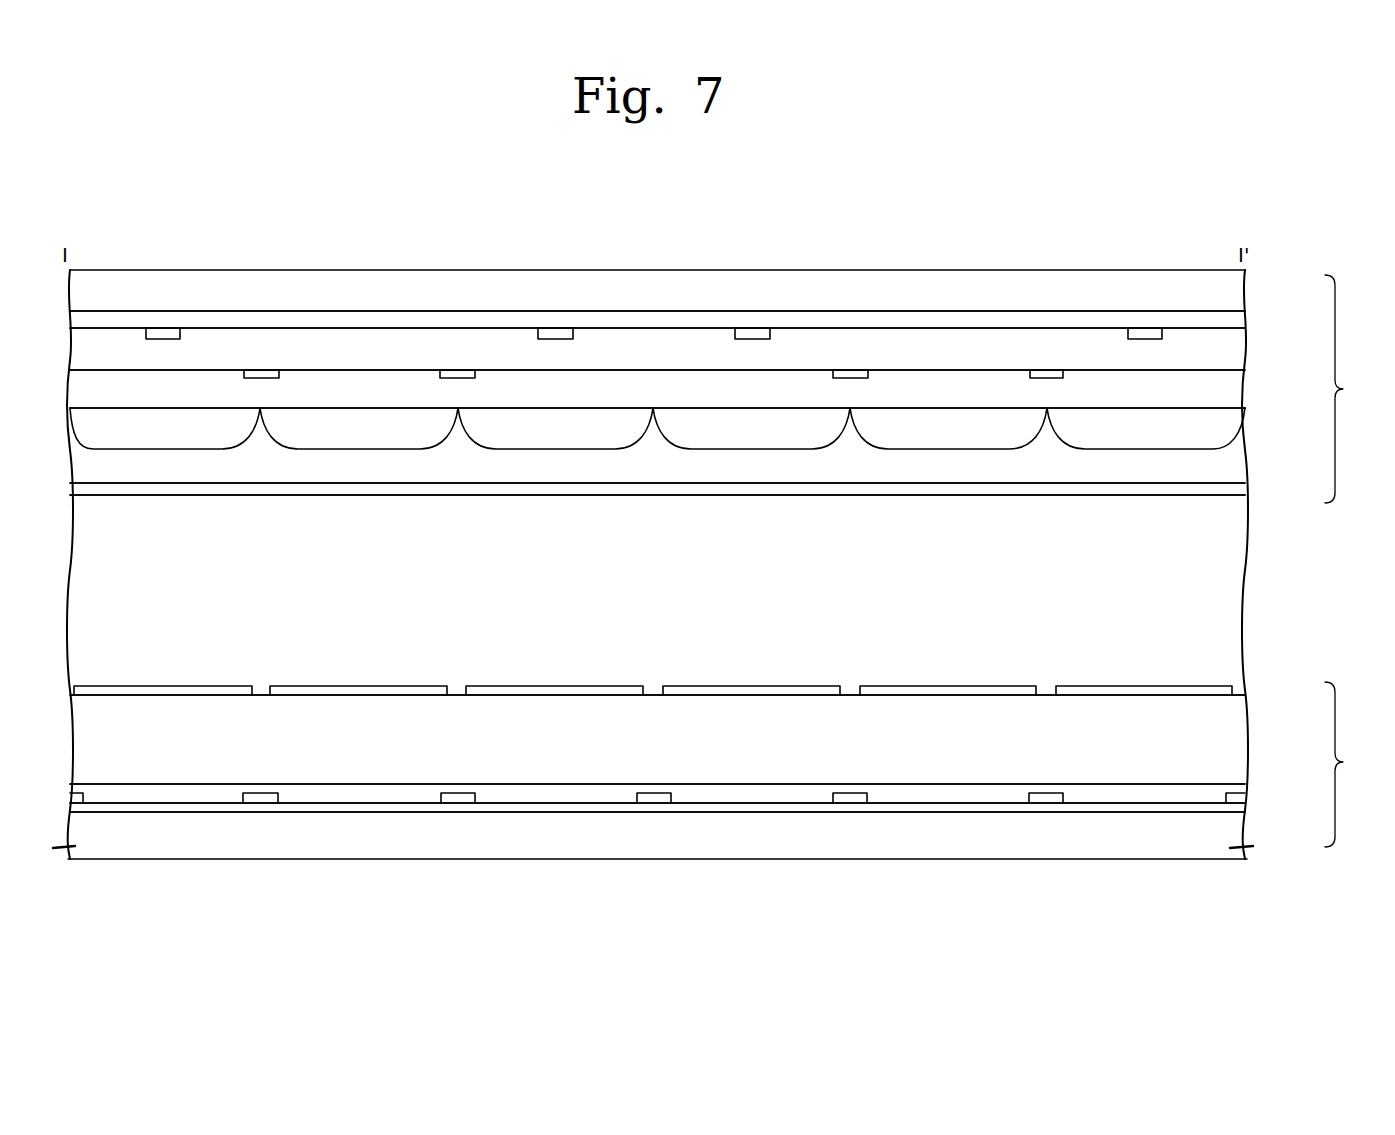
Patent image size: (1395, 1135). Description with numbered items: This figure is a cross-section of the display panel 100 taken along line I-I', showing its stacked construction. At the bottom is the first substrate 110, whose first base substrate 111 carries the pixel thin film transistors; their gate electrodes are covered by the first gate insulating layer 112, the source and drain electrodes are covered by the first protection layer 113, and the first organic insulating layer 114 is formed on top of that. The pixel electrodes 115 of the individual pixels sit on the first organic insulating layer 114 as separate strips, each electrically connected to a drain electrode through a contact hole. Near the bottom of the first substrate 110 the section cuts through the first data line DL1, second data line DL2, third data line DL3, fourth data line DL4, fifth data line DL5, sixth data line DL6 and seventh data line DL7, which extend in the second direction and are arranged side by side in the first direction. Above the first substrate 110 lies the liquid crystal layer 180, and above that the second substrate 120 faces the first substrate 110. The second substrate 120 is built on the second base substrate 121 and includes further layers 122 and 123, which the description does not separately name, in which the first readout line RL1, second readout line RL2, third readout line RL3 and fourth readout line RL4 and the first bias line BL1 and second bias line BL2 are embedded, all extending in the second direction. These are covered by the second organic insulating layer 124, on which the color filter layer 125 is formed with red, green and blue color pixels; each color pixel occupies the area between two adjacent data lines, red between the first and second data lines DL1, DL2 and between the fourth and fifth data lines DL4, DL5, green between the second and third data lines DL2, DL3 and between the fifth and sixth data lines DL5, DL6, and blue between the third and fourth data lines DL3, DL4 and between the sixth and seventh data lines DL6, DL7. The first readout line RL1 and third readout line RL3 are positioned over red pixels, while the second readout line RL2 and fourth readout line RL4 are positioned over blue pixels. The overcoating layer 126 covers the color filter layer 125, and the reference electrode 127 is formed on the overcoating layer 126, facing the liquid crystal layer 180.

The display panel 100 is at (1238, 207).
The first substrate 110 is at (1355, 764).
The first base substrate 111 is at (1230, 836).
The first gate insulating layer 112 is at (1228, 810).
The first protection layer 113 is at (1238, 789).
The first organic insulating layer 114 is at (1232, 742).
The pixel electrode 115 is at (1226, 692).
The second substrate 120 is at (1355, 389).
The second base substrate 121 is at (1232, 292).
The first sensing insulating layer 122 is at (1232, 324).
The second sensing insulating layer 123 is at (1232, 352).
The second organic insulating layer 124 is at (1232, 384).
The color filter layer 125 is at (1226, 447).
The overcoating layer 126 is at (1232, 464).
The reference electrode 127 is at (1232, 492).
The liquid crystal layer 180 is at (1232, 598).
The first readout line RL1 is at (163, 332).
The second readout line RL2 is at (556, 332).
The third readout line RL3 is at (752, 332).
The fourth readout line RL4 is at (1144, 332).
The first bias line BL1 is at (261, 373).
The second bias line BL2 is at (459, 373).
The first data line DL1 is at (77, 804).
The second data line DL2 is at (261, 804).
The third data line DL3 is at (458, 804).
The fourth data line DL4 is at (654, 804).
The fifth data line DL5 is at (850, 804).
The sixth data line DL6 is at (1046, 804).
The seventh data line DL7 is at (1235, 804).